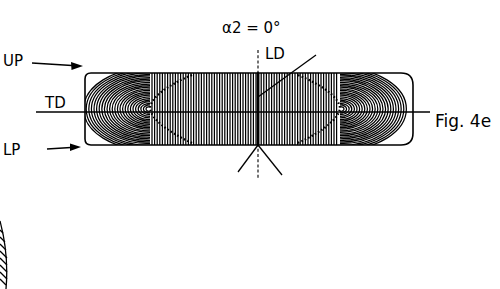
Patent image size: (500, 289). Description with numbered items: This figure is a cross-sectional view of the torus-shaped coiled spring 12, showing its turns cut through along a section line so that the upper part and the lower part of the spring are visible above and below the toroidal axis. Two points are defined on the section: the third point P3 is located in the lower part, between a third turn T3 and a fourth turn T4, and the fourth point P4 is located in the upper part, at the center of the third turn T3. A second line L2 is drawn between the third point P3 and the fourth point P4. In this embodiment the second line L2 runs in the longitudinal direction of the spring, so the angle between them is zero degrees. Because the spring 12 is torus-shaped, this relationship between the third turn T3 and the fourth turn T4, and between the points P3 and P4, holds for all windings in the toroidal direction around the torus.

The torus-shaped coiled spring 12 is at (34, 201).
The fourth point P4 is at (257, 74).
The third point P3 is at (258, 146).
The third turn T3 is at (280, 170).
The fourth turn T4 is at (227, 169).
The second line L2 is at (299, 70).